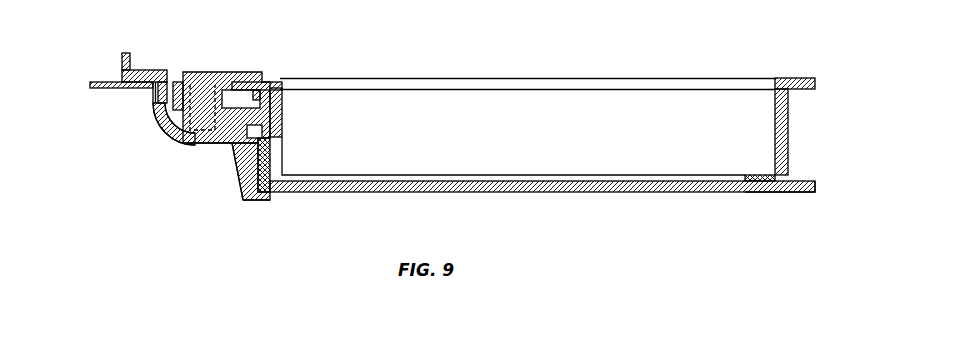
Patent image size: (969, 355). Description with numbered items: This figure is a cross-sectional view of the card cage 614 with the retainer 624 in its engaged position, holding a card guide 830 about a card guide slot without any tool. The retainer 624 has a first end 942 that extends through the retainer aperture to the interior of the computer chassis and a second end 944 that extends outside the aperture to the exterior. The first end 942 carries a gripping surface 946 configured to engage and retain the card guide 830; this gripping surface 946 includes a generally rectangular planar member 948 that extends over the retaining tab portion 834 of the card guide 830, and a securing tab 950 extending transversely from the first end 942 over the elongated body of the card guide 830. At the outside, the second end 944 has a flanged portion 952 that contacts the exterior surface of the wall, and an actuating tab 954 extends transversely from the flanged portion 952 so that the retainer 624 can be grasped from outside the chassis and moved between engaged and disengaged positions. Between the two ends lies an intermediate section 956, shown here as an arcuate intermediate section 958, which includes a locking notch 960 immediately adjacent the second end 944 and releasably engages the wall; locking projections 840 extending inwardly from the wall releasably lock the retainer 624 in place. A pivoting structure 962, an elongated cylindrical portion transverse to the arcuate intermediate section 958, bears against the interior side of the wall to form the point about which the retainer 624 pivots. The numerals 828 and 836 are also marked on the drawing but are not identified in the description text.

The card cage 614 is at (518, 73).
The retainer 624 is at (150, 126).
The side wall 828 is at (282, 93).
The card guide 830 is at (336, 193).
The retaining tab portion 834 is at (271, 150).
The base 836 is at (796, 193).
The locking projections 840 is at (151, 110).
The first end 942 is at (230, 182).
The second end 944 is at (217, 63).
The gripping surface 946 is at (283, 172).
The planar member 948 is at (243, 190).
The securing tab 950 is at (263, 201).
The flanged portion 952 is at (131, 69).
The actuating tab 954 is at (122, 70).
The intermediate section 956 is at (192, 154).
The arcuate intermediate section 958 is at (184, 142).
The locking notch 960 is at (155, 95).
The pivoting structure 962 is at (266, 80).